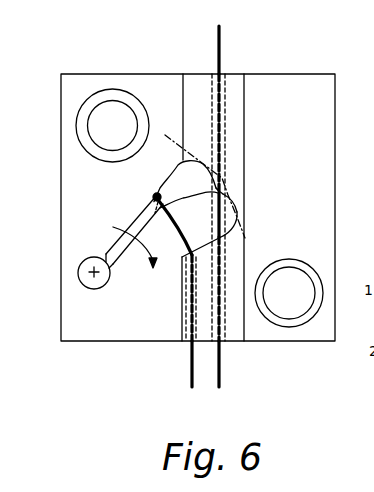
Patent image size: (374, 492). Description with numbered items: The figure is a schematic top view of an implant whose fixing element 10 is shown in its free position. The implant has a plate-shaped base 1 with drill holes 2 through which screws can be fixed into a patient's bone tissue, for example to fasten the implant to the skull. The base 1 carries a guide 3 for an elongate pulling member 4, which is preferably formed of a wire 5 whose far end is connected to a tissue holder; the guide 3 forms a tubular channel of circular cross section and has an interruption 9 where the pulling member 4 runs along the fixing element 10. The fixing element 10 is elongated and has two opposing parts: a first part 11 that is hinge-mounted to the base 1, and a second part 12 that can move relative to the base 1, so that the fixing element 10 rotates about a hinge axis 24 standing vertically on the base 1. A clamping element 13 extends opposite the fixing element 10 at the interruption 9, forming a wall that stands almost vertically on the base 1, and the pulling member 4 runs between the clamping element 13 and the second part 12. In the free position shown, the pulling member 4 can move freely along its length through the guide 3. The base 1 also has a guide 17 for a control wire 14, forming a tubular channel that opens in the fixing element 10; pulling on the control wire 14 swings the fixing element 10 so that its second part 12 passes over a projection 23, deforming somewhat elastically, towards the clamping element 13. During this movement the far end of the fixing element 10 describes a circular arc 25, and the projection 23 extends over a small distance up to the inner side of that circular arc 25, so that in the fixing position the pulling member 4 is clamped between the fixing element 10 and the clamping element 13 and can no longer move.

The base 1 is at (291, 90).
The drill holes 2 is at (105, 118).
The guide 3 is at (210, 88).
The pulling member 4 is at (220, 363).
The wire 5 is at (220, 43).
The interruption 9 is at (225, 215).
The fixing element 10 is at (143, 222).
The first part 11 is at (80, 267).
The second part 12 is at (182, 182).
The clamping element 13 is at (237, 203).
The control wire 14 is at (192, 358).
The guide 17 is at (182, 288).
The projection 23 is at (220, 191).
The hinge axis 24 is at (93, 273).
The circular arc 25 is at (165, 135).